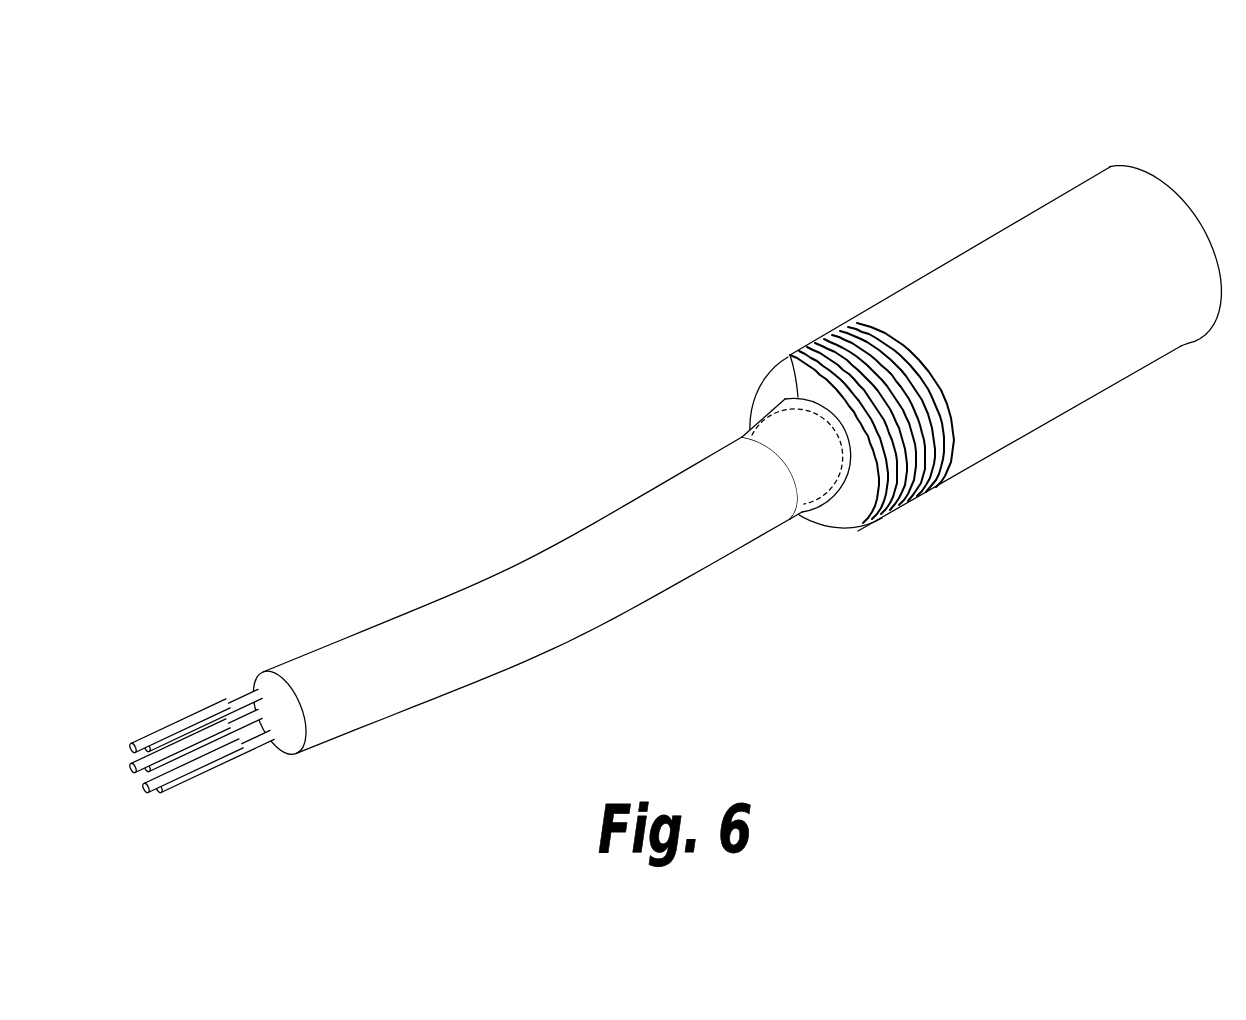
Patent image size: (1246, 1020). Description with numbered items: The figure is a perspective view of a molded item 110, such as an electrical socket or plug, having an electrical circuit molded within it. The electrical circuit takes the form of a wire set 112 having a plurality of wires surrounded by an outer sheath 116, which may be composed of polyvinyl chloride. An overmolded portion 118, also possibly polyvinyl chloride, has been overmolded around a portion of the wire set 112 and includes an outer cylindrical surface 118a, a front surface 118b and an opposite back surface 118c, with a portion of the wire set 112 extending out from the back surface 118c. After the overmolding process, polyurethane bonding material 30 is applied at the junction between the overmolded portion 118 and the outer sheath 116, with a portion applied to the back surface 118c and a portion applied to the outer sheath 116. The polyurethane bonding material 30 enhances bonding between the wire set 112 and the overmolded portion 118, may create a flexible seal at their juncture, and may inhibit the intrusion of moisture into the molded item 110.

The molded item 110 is at (836, 140).
The wire set 112 is at (565, 458).
The outer sheath 116 is at (420, 603).
The overmolded portion 118 is at (1000, 260).
The outer cylindrical surface 118a is at (1070, 392).
The front surface 118b is at (1156, 172).
The back surface 118c is at (856, 526).
The polyurethane bonding material 30 is at (790, 355).